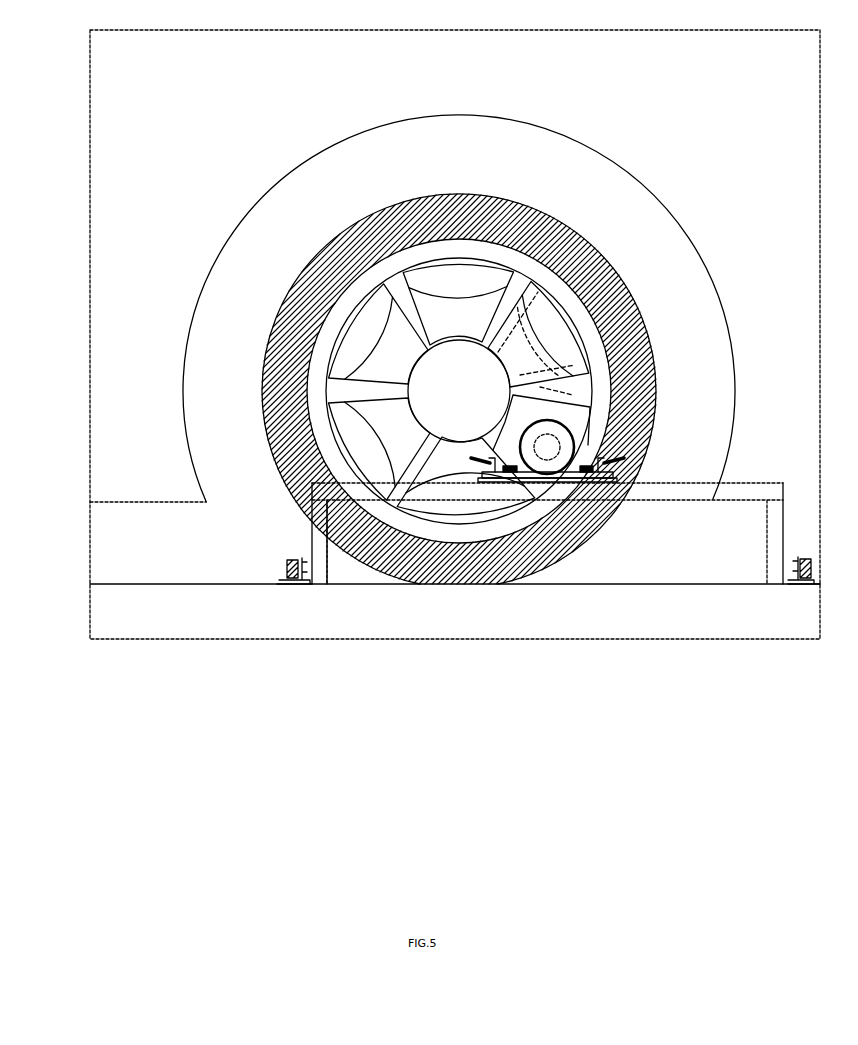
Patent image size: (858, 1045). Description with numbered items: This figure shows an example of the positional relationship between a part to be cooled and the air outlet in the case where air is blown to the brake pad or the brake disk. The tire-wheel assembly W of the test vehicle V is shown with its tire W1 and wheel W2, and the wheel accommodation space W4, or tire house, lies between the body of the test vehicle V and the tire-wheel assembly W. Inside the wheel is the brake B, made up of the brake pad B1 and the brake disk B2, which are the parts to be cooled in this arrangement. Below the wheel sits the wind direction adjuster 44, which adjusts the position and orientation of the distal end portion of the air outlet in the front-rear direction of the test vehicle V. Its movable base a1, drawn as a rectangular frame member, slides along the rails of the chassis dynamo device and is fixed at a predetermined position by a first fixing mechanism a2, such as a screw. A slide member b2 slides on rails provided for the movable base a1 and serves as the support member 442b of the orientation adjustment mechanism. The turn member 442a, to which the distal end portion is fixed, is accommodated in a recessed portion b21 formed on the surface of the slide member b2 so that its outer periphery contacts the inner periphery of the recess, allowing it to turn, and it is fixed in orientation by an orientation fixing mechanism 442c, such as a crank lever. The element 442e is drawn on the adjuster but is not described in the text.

The tire-wheel assembly W is at (479, 323).
The tire W1 is at (580, 240).
The wheel W2 is at (519, 248).
The wheel accommodation space W4 is at (302, 232).
The brake B is at (677, 366).
The brake pad B1 is at (560, 320).
The brake disk B2 is at (573, 395).
The test vehicle V is at (748, 500).
The wind direction adjuster 44 is at (537, 624).
The turn member 442a is at (532, 482).
The support member 442b is at (513, 482).
The orientation fixing mechanism 442c is at (477, 463).
The right engaging tab 442e is at (624, 470).
The slide member b2 is at (540, 650).
The recessed portion b21 is at (580, 480).
The movable base a1 is at (353, 560).
The first fixing mechanism a2 is at (574, 445).